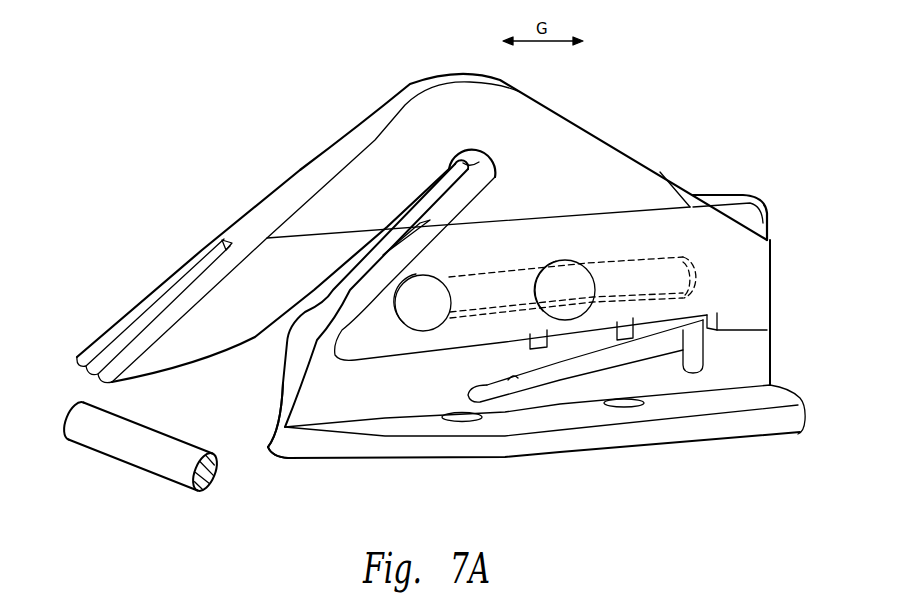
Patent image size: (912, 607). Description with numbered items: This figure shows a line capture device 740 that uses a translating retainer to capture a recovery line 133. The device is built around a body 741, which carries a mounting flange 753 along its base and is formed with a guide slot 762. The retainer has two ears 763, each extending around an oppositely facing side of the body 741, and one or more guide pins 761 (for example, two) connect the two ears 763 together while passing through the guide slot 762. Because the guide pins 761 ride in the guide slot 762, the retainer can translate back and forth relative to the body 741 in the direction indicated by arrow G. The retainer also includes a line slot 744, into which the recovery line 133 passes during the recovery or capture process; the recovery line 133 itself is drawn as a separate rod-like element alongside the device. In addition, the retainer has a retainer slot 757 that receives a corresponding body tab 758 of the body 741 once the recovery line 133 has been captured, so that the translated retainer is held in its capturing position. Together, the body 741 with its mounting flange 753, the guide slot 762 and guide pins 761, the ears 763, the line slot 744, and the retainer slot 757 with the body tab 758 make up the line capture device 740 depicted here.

The line capture device 740 is at (617, 132).
The body 741 is at (752, 355).
The line slot 744 is at (250, 363).
The mounting flange 753 is at (793, 422).
The retainer slot 757 is at (157, 304).
The body tab 758 is at (278, 407).
The guide pins 761 is at (422, 331).
The guide slot 762 is at (660, 257).
The ears 763 is at (333, 358).
The recovery line 133 is at (118, 448).